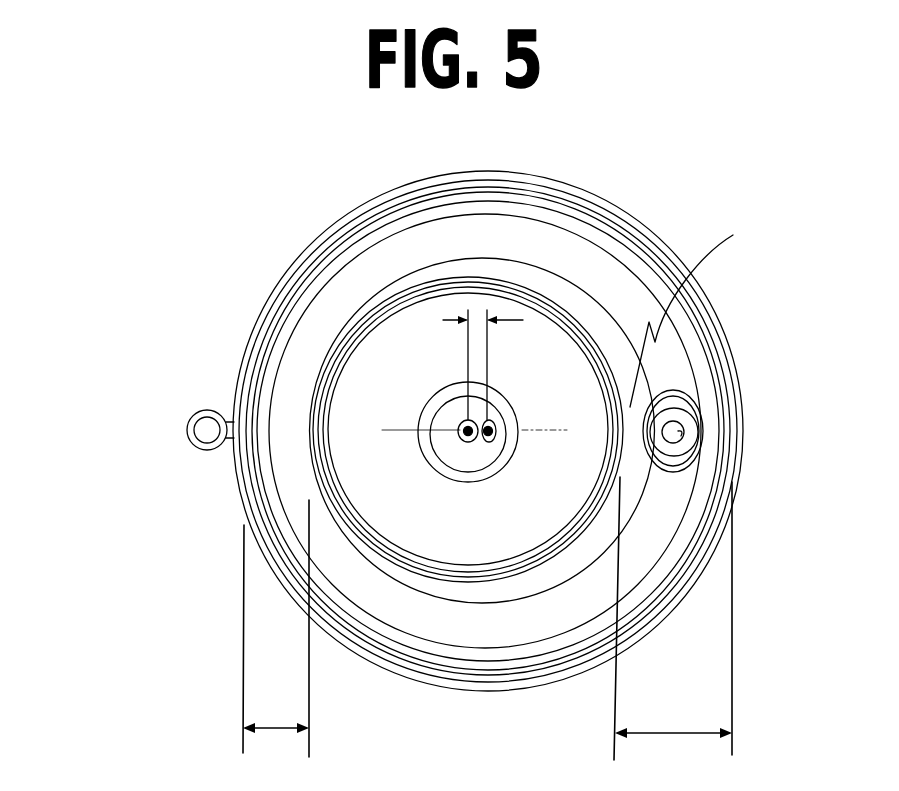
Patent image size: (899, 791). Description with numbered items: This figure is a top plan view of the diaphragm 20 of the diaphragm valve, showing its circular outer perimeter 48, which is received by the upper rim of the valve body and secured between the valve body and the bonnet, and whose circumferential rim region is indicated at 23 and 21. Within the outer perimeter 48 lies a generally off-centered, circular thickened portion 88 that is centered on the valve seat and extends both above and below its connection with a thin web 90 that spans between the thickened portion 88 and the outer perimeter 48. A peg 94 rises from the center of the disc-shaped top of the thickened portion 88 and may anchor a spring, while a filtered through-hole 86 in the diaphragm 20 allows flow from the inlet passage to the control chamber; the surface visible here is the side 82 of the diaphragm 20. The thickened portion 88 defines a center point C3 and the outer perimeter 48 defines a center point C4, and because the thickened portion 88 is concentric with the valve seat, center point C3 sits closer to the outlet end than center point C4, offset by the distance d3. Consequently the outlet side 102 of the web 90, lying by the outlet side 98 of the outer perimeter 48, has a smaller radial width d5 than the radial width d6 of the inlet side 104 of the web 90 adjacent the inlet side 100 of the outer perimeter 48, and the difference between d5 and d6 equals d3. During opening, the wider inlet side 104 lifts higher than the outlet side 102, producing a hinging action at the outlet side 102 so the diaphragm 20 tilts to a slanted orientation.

The diaphragm 20 is at (121, 213).
The outer perimeter 48 is at (545, 183).
The lower side 82 is at (398, 258).
The outlet side 98 is at (250, 373).
The inlet side 100 is at (738, 402).
The outlet side 102 is at (290, 428).
The lid body 23 is at (310, 390).
The top surface 21 is at (675, 363).
The thickened portion 88 is at (490, 560).
The thin web 90 is at (390, 607).
The inlet side 104 is at (733, 235).
The filtered through-hole 86 is at (682, 437).
The peg 94 is at (457, 460).
The center point of the thickened portion C3 is at (460, 422).
The center point of the outer perimeter C4 is at (492, 422).
The distance d3 is at (496, 329).
The radial width of the outlet side of the web d5 is at (276, 628).
The radial width of the inlet side of the web d6 is at (673, 618).